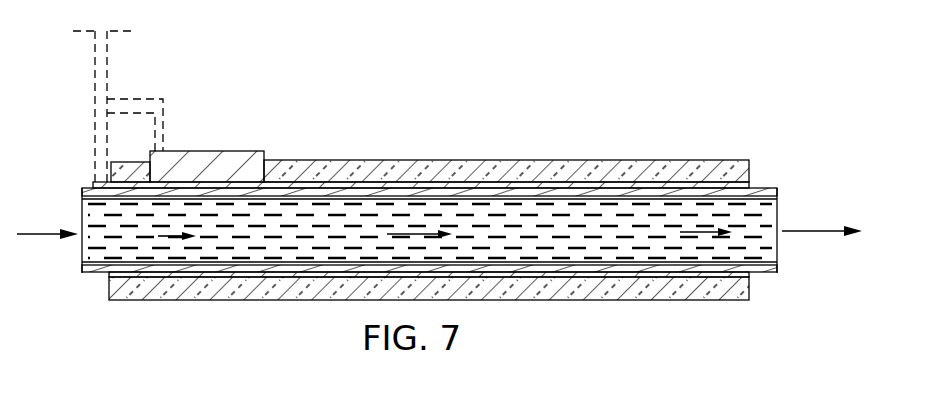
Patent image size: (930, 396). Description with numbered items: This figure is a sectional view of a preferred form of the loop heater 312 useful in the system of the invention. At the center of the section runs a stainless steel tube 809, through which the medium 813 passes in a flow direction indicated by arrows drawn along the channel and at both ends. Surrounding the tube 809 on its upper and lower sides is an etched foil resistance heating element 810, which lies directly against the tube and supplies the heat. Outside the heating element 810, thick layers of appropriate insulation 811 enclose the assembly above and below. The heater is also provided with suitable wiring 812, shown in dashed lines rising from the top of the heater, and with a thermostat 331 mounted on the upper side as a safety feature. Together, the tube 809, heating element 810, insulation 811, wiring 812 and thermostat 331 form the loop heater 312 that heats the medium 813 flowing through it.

The wiring 812 is at (103, 31).
The thermostat 331 is at (213, 151).
The loop heater 312 is at (433, 160).
The insulation 811 is at (753, 164).
The etched foil resistance heating element 810 is at (753, 183).
The stainless steel tube 809 is at (780, 192).
The medium 813 is at (439, 233).